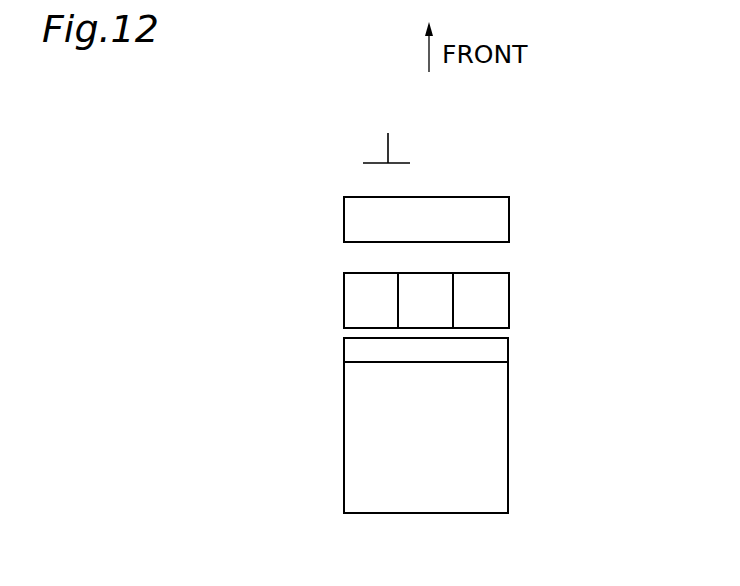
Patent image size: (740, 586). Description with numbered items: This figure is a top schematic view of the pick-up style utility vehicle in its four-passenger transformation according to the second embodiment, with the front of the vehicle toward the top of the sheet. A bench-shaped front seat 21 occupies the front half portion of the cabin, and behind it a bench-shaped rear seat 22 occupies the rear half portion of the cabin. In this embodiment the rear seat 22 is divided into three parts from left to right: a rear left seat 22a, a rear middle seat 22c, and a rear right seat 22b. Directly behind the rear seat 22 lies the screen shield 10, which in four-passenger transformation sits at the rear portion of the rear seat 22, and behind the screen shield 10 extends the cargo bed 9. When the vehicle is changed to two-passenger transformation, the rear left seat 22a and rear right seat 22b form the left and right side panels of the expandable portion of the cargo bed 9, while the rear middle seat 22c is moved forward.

The front seat 21 is at (321, 204).
The rear seat 22 is at (304, 302).
The rear left seat 22a is at (355, 293).
The rear right seat 22b is at (480, 302).
The rear middle seat 22c is at (423, 298).
The screen shield 10 is at (492, 353).
The cargo bed 9 is at (320, 441).